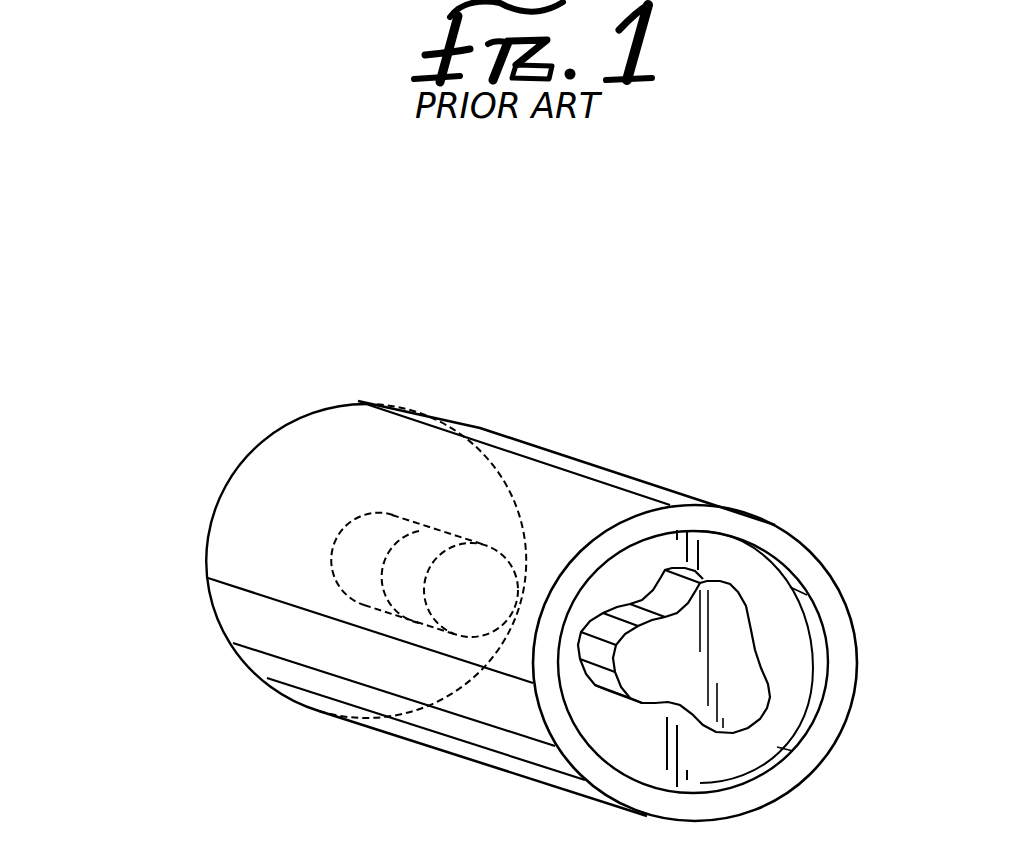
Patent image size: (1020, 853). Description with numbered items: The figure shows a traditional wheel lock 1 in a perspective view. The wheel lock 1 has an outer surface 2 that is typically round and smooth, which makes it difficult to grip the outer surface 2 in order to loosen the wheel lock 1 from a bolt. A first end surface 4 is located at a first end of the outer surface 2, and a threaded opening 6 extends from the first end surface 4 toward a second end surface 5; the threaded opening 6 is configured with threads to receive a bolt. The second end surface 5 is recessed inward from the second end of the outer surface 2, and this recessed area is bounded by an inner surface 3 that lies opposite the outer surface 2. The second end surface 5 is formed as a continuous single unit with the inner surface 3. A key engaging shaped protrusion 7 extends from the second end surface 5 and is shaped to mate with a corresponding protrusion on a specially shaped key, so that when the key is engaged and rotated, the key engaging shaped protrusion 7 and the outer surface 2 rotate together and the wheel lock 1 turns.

The wheel lock 1 is at (168, 412).
The outer surface 2 is at (473, 710).
The inner surface 3 is at (817, 665).
The first end surface 4 is at (317, 438).
The second end surface 5 is at (758, 587).
The threaded opening 6 is at (357, 588).
The key engaging shaped protrusion 7 is at (733, 695).